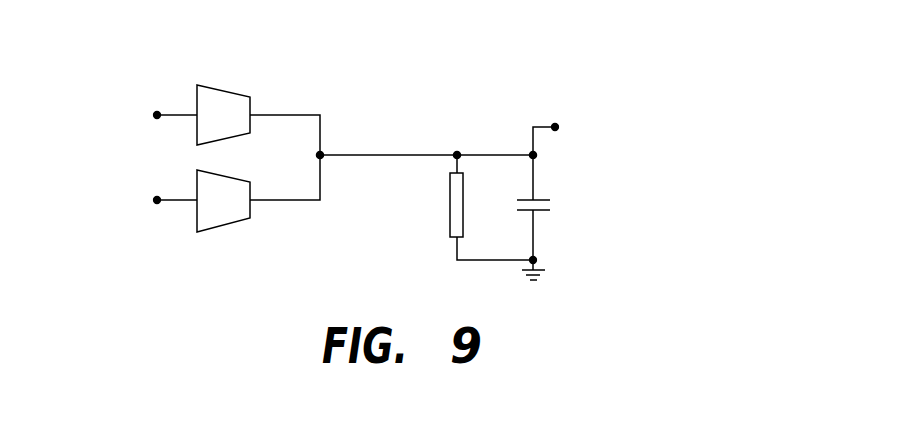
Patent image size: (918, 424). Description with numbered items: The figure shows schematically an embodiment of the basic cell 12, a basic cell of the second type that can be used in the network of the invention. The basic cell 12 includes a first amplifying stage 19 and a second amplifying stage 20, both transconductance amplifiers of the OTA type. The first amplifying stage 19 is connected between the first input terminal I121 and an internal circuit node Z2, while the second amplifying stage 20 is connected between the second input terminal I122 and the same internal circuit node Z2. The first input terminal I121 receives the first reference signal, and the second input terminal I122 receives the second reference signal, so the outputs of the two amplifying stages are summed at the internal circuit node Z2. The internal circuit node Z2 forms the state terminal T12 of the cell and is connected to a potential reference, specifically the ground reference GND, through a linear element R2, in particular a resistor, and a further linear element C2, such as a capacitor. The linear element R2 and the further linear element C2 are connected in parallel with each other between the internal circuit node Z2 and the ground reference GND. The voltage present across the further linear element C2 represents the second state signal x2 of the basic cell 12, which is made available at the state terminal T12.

The second basic cell 12 is at (150, 49).
The first amplifying stage 19 is at (237, 92).
The second amplifying stage 20 is at (233, 178).
The first input terminal I121 is at (157, 112).
The second input terminal I122 is at (157, 197).
The linear element R2 is at (470, 207).
The further linear element C2 is at (515, 207).
The second state signal x2 is at (570, 214).
The internal circuit node Z2 is at (531, 154).
The state terminal T12 is at (556, 129).
The ground reference GND is at (537, 285).